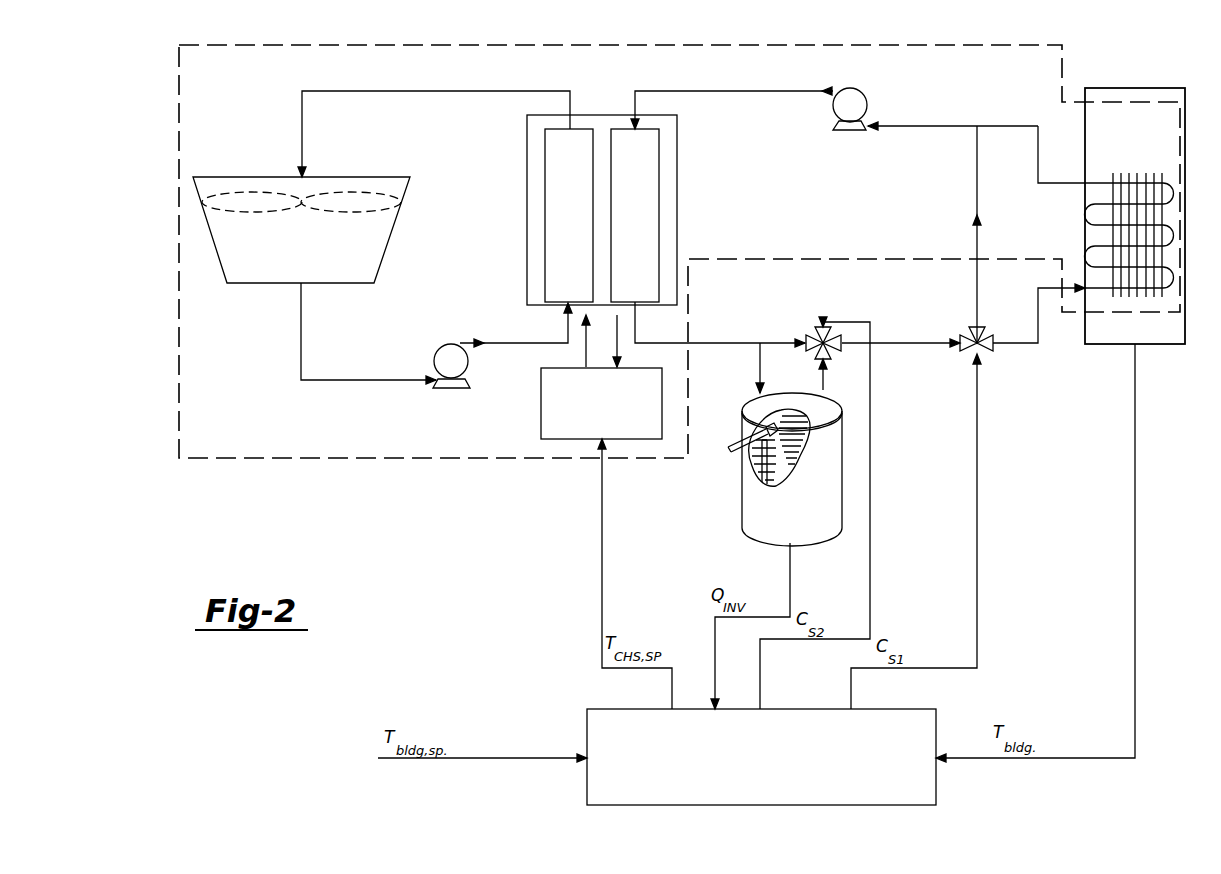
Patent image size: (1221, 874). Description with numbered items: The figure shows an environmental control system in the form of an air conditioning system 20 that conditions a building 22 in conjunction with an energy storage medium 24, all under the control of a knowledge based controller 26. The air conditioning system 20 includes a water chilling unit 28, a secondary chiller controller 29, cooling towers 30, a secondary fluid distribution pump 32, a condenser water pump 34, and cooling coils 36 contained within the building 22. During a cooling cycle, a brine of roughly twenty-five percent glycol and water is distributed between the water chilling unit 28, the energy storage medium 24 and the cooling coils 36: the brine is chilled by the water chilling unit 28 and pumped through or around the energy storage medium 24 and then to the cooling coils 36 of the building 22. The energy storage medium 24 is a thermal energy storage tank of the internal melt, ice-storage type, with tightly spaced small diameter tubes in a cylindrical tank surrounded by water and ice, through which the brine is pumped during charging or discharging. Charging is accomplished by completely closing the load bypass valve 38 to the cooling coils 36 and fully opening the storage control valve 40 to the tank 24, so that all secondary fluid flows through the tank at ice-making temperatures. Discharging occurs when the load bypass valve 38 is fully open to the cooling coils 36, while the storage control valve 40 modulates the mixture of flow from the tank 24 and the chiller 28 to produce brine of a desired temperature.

The air conditioning system 20 is at (178, 112).
The building 22 is at (1135, 88).
The energy storage medium 24 is at (762, 518).
The knowledge based controller 26 is at (600, 727).
The water chilling unit 28 is at (677, 175).
The secondary chiller controller 29 is at (572, 439).
The cooling towers 30 is at (390, 226).
The secondary fluid distribution pump 32 is at (833, 113).
The condenser water pump 34 is at (437, 352).
The cooling coils 36 is at (1135, 297).
The load bypass valve 38 is at (990, 348).
The storage control valve 40 is at (820, 328).